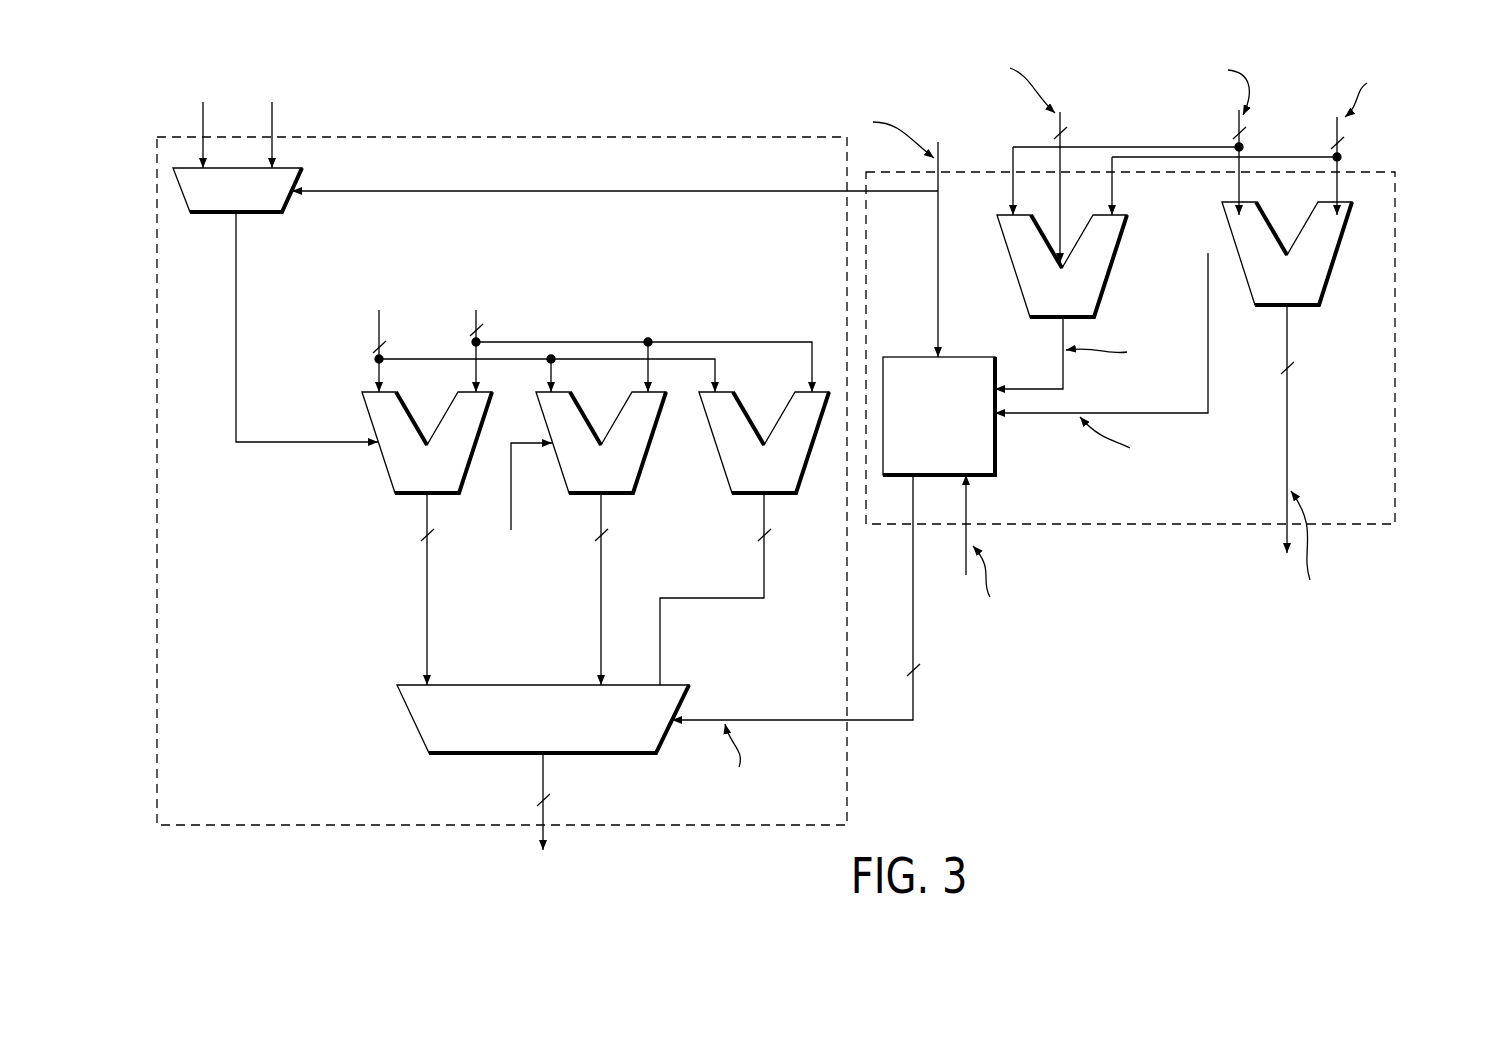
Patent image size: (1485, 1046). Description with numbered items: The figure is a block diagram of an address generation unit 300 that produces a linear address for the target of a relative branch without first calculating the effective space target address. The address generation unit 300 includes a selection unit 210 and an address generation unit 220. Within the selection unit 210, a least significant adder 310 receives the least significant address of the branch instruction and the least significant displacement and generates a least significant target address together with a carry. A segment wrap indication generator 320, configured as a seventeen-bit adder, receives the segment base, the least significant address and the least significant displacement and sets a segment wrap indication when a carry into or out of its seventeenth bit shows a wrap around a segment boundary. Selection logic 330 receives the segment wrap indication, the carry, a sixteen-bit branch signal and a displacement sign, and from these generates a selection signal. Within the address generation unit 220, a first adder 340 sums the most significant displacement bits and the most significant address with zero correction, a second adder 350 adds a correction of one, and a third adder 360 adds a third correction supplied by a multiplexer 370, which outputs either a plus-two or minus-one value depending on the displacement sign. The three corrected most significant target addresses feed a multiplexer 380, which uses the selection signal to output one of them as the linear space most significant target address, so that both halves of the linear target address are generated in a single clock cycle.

The address generation unit 300 is at (725, 122).
The address generation unit 220 is at (850, 778).
The selection unit 210 is at (1098, 527).
The multiplexer 370 is at (252, 217).
The third adder 360 is at (383, 470).
The second adder 350 is at (652, 472).
The first adder 340 is at (798, 497).
The multiplexer 380 is at (464, 683).
The selection logic 330 is at (980, 478).
The segment wrap indication generator 320 is at (1107, 287).
The least significant adder 310 is at (1338, 255).